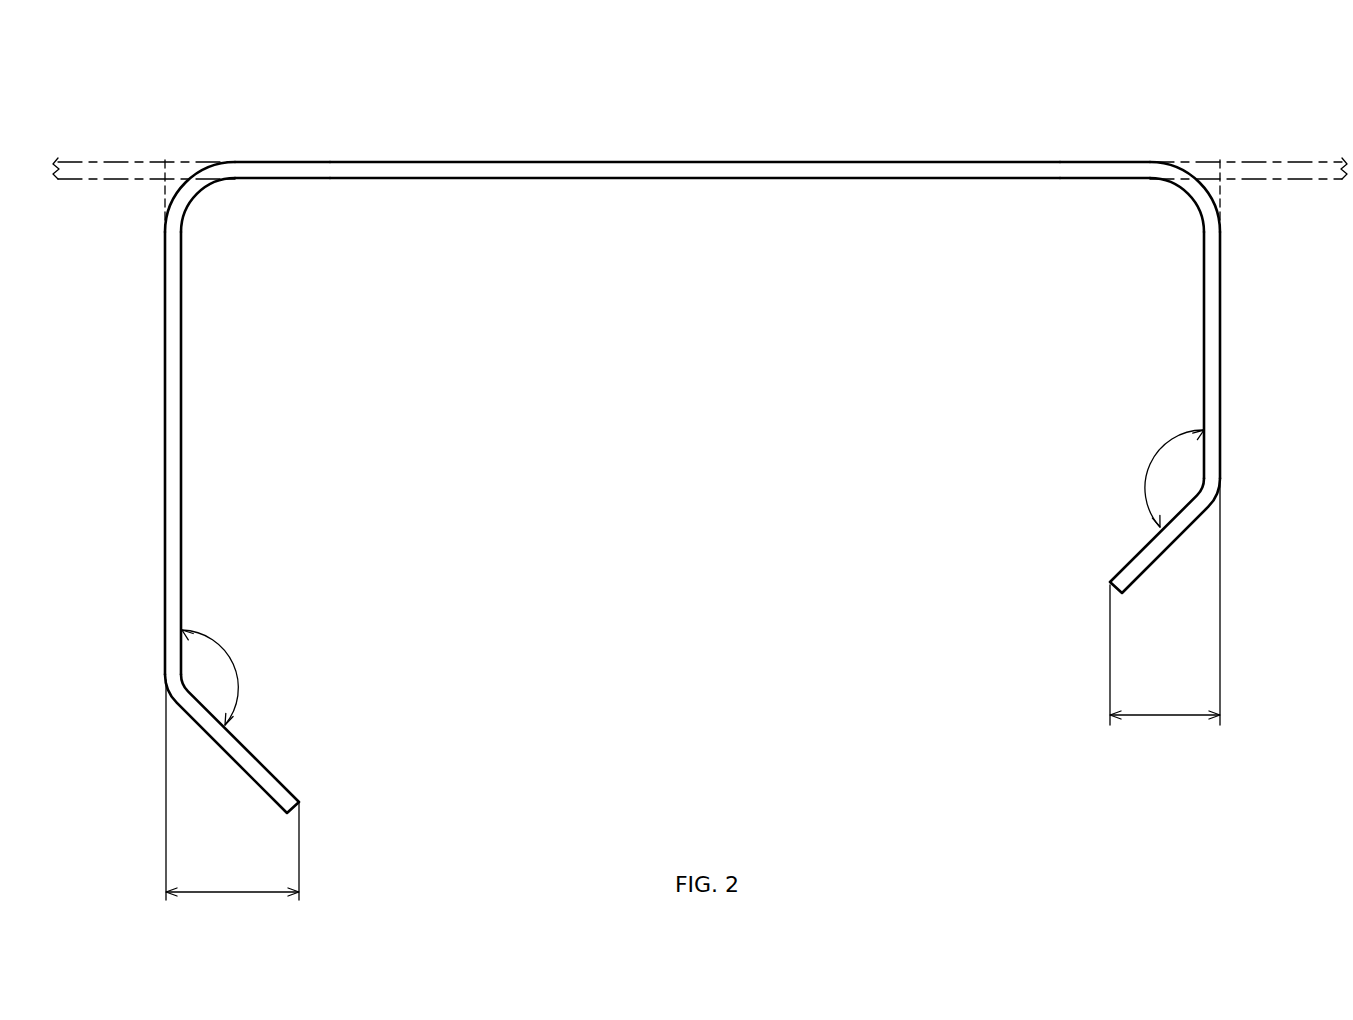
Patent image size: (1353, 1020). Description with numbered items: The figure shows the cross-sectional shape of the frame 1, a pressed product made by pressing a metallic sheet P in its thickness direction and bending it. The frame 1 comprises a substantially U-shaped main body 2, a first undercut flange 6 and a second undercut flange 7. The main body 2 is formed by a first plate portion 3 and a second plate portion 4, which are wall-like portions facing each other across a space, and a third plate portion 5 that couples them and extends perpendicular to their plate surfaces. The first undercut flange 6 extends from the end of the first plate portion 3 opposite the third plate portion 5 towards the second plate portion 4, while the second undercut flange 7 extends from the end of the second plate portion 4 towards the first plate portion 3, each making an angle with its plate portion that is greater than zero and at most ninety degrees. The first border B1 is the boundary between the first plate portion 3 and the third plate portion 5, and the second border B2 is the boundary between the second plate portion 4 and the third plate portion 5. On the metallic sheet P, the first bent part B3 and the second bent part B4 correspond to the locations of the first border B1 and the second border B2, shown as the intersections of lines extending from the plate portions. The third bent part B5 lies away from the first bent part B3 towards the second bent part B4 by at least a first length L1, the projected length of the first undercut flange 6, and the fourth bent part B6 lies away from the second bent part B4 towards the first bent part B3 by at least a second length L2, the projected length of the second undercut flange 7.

The frame 1 is at (1110, 115).
The main body 2 is at (682, 160).
The first plate portion 3 is at (178, 457).
The second plate portion 4 is at (1208, 367).
The third plate portion 5 is at (785, 178).
The first undercut flange 6 is at (230, 752).
The second undercut flange 7 is at (1157, 548).
The first border B1 is at (200, 198).
The second border B2 is at (1185, 198).
The first bent part B3 is at (165, 160).
The second bent part B4 is at (1220, 160).
The third bent part B5 is at (308, 170).
The fourth bent part B6 is at (1063, 170).
The metallic sheet P is at (1305, 160).
The first length L1 is at (232, 790).
The second length L2 is at (1165, 602).